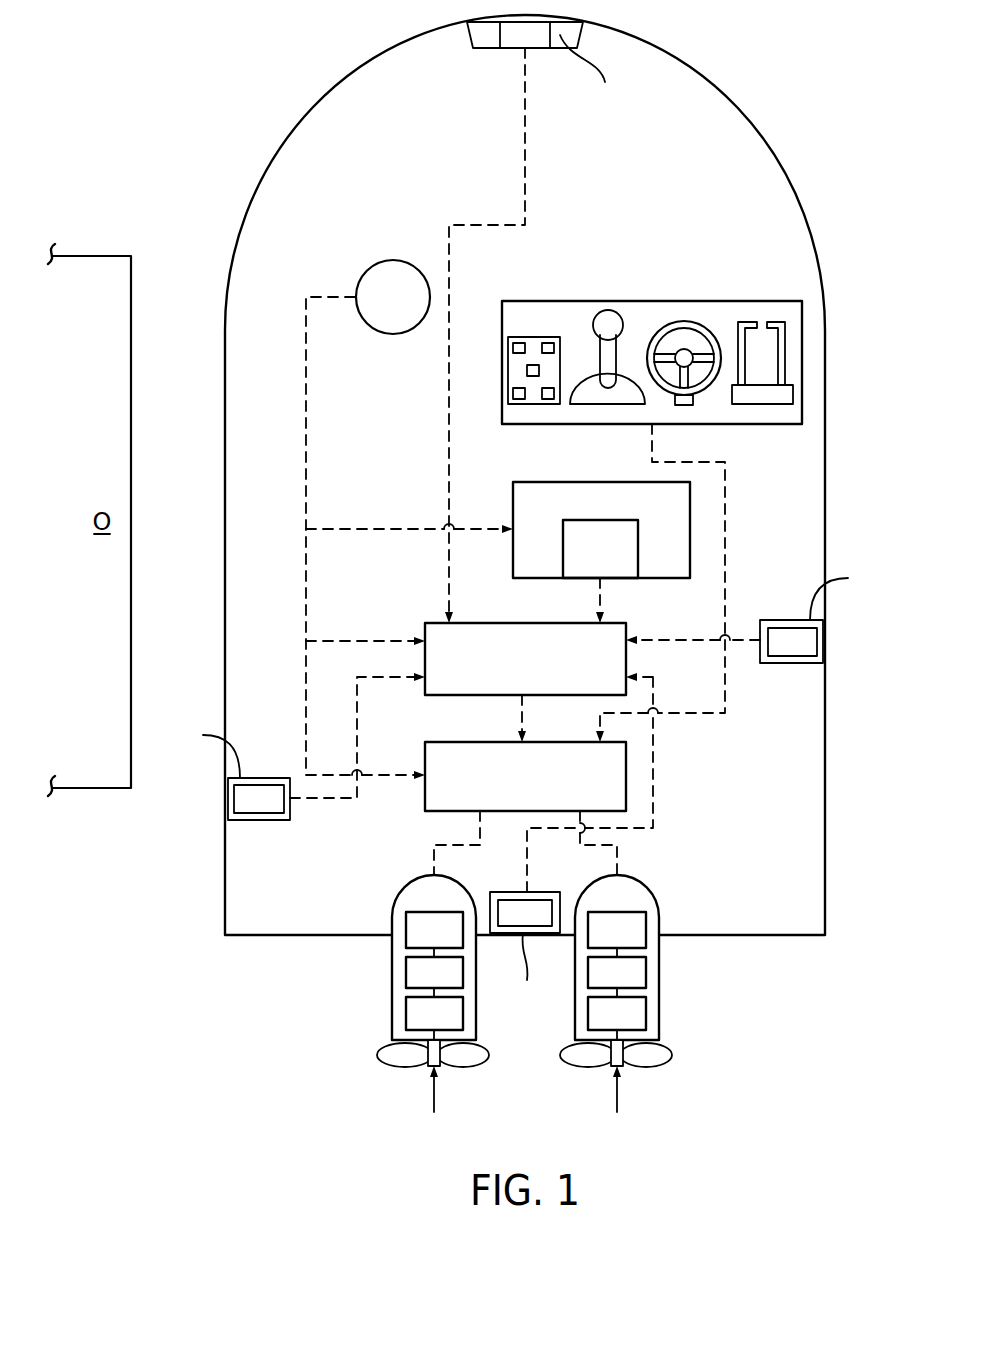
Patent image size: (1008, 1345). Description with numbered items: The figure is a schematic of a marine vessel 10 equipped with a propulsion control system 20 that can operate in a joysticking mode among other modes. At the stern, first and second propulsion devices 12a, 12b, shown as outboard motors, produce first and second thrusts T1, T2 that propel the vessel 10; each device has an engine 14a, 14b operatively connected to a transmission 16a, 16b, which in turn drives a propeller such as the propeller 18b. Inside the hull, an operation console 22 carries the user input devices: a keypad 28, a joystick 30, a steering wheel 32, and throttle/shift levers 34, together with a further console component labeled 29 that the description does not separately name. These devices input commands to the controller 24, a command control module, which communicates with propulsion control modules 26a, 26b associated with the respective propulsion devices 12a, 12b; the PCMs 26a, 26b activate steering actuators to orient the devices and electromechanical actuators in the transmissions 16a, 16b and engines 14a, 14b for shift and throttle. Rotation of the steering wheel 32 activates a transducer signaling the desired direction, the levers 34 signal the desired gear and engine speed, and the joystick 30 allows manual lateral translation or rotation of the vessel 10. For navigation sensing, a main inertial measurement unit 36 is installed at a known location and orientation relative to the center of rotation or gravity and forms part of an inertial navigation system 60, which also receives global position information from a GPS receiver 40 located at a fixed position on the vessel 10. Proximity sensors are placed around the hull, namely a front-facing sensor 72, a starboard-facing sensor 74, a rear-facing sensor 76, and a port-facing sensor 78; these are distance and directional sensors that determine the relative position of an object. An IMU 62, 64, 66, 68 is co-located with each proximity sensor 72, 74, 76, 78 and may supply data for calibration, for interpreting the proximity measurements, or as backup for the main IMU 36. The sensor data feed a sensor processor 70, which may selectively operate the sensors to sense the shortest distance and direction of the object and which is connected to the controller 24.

The marine vessel 10 is at (806, 216).
The propulsion control system 20 is at (537, 475).
The operation console 22 is at (654, 312).
The controller 24 is at (626, 765).
The propulsion control module 26a is at (417, 912).
The propulsion control module 26b is at (633, 912).
The keypad 28 is at (529, 337).
The joystick base 29 is at (579, 340).
The joystick 30 is at (620, 356).
The steering wheel 32 is at (683, 321).
The throttle/shift levers 34 is at (745, 322).
The main inertial measurement unit 36 is at (600, 520).
The GPS receiver 40 is at (372, 265).
The inertial navigation system 60 is at (582, 511).
The sensor IMU 62 is at (537, 48).
The sensor IMU 64 is at (780, 620).
The sensor IMU 66 is at (538, 892).
The sensor IMU 68 is at (243, 820).
The sensor processor 70 is at (528, 623).
The front-facing proximity sensor 72 is at (592, 74).
The starboard-facing proximity sensor 74 is at (843, 582).
The rear-facing proximity sensor 76 is at (525, 972).
The port-facing proximity sensor 78 is at (205, 750).
The first propulsion device 12a is at (389, 941).
The second propulsion device 12b is at (522, 958).
The engine 14a is at (406, 970).
The engine 14b is at (646, 970).
The transmission 16a is at (406, 1013).
The transmission 16b is at (646, 1013).
The propeller 18b is at (672, 1057).
The first thrust T1 is at (434, 1097).
The second thrust T2 is at (617, 1097).